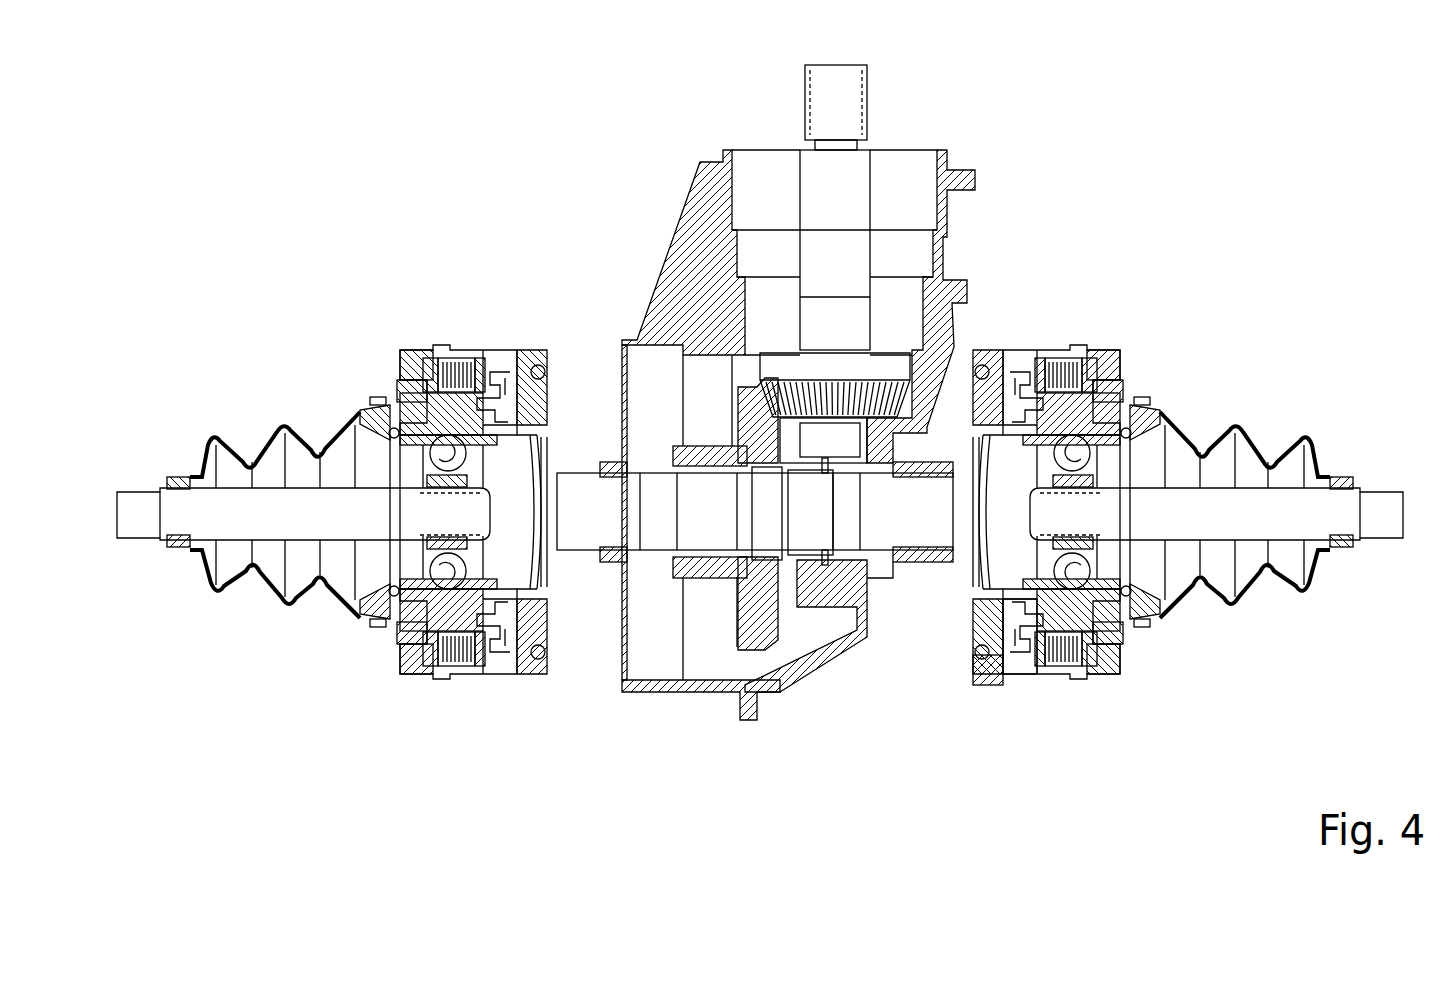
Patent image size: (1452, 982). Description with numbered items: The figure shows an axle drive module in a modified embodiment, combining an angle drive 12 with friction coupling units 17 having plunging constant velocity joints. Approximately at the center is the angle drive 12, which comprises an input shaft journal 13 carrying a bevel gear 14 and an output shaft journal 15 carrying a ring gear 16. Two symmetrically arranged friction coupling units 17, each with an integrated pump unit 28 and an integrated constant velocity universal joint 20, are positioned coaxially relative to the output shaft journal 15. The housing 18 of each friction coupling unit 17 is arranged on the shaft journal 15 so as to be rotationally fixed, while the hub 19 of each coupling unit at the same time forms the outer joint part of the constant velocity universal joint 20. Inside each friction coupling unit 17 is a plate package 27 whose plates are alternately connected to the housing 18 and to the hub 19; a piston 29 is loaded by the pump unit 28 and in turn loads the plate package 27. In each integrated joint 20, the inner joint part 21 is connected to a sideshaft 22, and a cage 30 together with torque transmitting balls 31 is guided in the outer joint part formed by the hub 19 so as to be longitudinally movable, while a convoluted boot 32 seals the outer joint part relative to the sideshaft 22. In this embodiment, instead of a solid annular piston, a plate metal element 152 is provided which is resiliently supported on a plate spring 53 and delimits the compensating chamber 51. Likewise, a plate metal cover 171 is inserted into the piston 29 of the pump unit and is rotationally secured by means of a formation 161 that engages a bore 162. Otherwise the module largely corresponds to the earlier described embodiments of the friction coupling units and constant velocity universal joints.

The angle drive 12 is at (668, 233).
The input shaft journal 13 is at (860, 190).
The bevel gear 14 is at (787, 390).
The output shaft journal 15 is at (651, 540).
The ring gear 16 is at (755, 625).
The formation 161 is at (957, 407).
The bore 162 is at (977, 445).
The plate metal cover 171 is at (960, 583).
The friction coupling unit 17 is at (1074, 342).
The housing 18 is at (978, 677).
The hub 19 is at (1082, 670).
The constant velocity universal joint 20 is at (1139, 382).
The inner joint part 21 is at (1192, 593).
The sideshaft 22 is at (1212, 523).
The plate package 27 is at (1072, 673).
The pump unit 28 is at (1052, 342).
The piston 29 is at (1005, 655).
The cage 30 is at (1088, 565).
The torque transmitting ball 31 is at (1085, 453).
The convoluted boot 32 is at (1282, 578).
The compensating chamber 51 is at (1007, 616).
The plate spring 53 is at (1037, 640).
The plate metal element 152 is at (1037, 383).